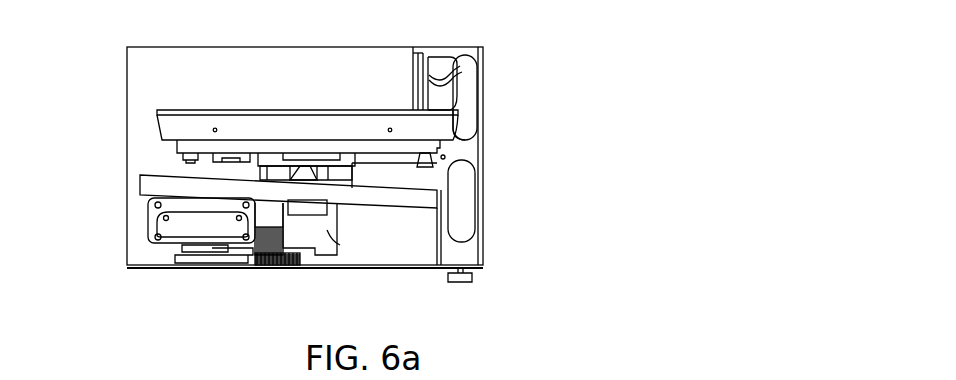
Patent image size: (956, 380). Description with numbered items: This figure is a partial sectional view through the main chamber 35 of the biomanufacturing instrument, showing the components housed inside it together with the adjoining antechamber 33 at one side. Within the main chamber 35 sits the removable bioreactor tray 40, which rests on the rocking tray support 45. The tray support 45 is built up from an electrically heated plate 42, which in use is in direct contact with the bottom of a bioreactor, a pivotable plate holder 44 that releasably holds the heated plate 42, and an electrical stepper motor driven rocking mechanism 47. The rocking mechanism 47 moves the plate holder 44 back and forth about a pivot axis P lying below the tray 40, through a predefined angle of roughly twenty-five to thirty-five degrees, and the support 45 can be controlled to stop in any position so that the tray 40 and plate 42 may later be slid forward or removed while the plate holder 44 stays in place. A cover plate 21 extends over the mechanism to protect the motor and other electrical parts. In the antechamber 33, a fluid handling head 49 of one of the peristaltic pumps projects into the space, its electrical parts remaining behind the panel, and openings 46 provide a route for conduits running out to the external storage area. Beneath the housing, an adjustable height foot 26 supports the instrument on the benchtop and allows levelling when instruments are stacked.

The main chamber 35 is at (207, 65).
The bioreactor tray 40 is at (172, 125).
The rocking tray support 45 is at (142, 161).
The cover plate 21 is at (152, 185).
The pivotable plate holder 44 is at (318, 208).
The pivot axis P is at (285, 235).
The rocking mechanism 47 is at (326, 230).
The antechamber 33 is at (458, 57).
The fluid handling head 49 is at (450, 95).
The openings 46 is at (465, 122).
The electrically heated plate 42 is at (446, 158).
The adjustable height feet 26 is at (466, 280).